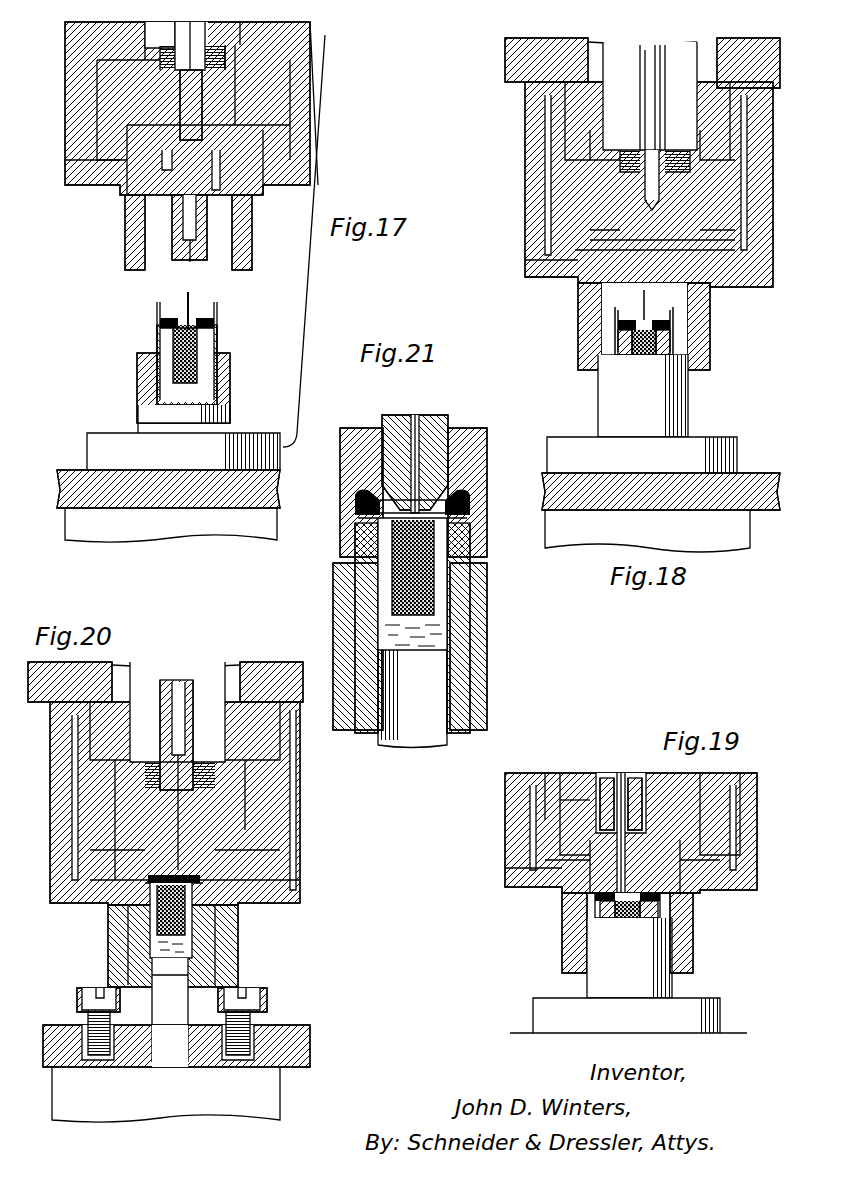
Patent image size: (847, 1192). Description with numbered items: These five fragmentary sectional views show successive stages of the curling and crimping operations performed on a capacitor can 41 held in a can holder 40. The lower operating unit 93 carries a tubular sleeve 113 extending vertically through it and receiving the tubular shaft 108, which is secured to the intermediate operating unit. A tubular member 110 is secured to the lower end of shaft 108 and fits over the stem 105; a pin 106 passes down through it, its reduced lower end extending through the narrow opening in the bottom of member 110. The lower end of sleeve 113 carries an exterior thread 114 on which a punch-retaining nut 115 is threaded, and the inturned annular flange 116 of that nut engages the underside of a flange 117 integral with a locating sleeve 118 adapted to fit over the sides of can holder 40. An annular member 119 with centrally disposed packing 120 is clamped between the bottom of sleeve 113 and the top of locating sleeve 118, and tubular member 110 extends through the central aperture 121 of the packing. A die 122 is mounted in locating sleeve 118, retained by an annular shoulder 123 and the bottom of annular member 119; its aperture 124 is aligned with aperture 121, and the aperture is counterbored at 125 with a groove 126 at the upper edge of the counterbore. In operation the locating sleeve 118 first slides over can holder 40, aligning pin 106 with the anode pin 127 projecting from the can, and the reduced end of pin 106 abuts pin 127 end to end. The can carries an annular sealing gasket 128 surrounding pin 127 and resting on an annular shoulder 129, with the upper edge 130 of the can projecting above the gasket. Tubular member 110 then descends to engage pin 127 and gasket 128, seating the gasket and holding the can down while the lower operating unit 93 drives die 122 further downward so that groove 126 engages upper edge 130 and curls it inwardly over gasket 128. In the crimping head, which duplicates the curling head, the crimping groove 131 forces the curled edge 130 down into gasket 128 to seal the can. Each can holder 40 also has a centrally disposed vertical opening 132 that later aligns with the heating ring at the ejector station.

In FIG. 17, the can holder 40 is at (95, 445).
In FIG. 18, the can holder 40 is at (680, 392).
In FIG. 20, the can holder 40 is at (76, 1005).
In FIG. 19, the can holder 40 is at (675, 998).
In FIG. 17, the can 41 is at (205, 350).
In FIG. 21, the can 41 is at (450, 612).
In FIG. 18, the can 41 is at (628, 355).
In FIG. 20, the can 41 is at (192, 935).
In FIG. 19, the can 41 is at (615, 918).
In FIG. 17, the lower operating unit 93 is at (325, 31).
In FIG. 18, the lower operating unit 93 is at (553, 124).
In FIG. 17, the stem 105 is at (158, 80).
In FIG. 17, the pin 106 is at (178, 106).
In FIG. 17, the tubular shaft 108 is at (184, 37).
In FIG. 21, the tubular member 110 is at (438, 425).
In FIG. 17, the tubular sleeve 113 is at (100, 33).
In FIG. 18, the tubular sleeve 113 is at (640, 42).
In FIG. 20, the tubular sleeve 113 is at (236, 665).
In FIG. 17, the exterior thread 114 is at (320, 50).
In FIG. 19, the punch-retaining nut 115 is at (745, 773).
In FIG. 17, the inturned annular flange 116 is at (272, 194).
In FIG. 18, the inturned annular flange 116 is at (573, 283).
In FIG. 19, the inturned annular flange 116 is at (530, 885).
In FIG. 17, the flange 117 is at (108, 143).
In FIG. 18, the flange 117 is at (725, 250).
In FIG. 20, the flange 117 is at (85, 848).
In FIG. 17, the locating sleeve 118 is at (135, 238).
In FIG. 18, the locating sleeve 118 is at (583, 330).
In FIG. 18, the annular member 119 is at (565, 185).
In FIG. 19, the annular member 119 is at (550, 800).
In FIG. 18, the packing 120 is at (620, 138).
In FIG. 19, the packing 120 is at (614, 778).
In FIG. 18, the central aperture 121 is at (665, 150).
In FIG. 20, the central aperture 121 is at (195, 765).
In FIG. 19, the die 122 is at (575, 848).
In FIG. 18, the annular shoulder 123 is at (720, 290).
In FIG. 20, the aperture 124 is at (65, 905).
In FIG. 18, the counterbore 125 is at (605, 290).
In FIG. 17, the groove 126 is at (150, 170).
In FIG. 18, the groove 126 is at (575, 258).
In FIG. 19, the groove 126 is at (575, 885).
In FIG. 17, the pin 127 is at (190, 298).
In FIG. 21, the pin 127 is at (410, 465).
In FIG. 18, the pin 127 is at (700, 330).
In FIG. 17, the annular sealing gasket 128 is at (165, 312).
In FIG. 21, the annular sealing gasket 128 is at (360, 516).
In FIG. 20, the annular sealing gasket 128 is at (200, 878).
In FIG. 17, the annular shoulder 129 is at (158, 337).
In FIG. 21, the annular shoulder 129 is at (482, 548).
In FIG. 17, the upper edge of can 130 is at (218, 311).
In FIG. 21, the upper edge of can 130 is at (470, 500).
In FIG. 21, the crimping groove 131 is at (358, 495).
In FIG. 20, the vertical opening 132 is at (165, 1045).